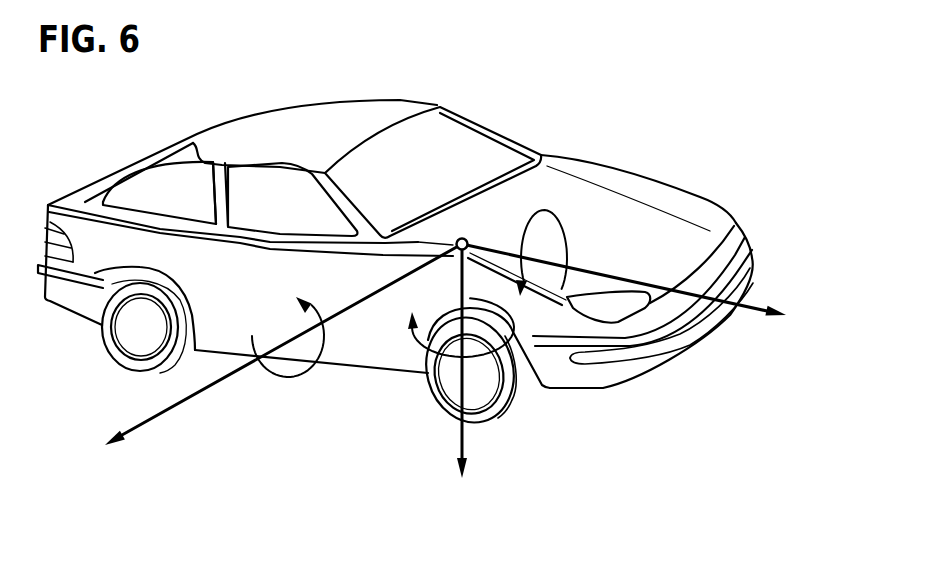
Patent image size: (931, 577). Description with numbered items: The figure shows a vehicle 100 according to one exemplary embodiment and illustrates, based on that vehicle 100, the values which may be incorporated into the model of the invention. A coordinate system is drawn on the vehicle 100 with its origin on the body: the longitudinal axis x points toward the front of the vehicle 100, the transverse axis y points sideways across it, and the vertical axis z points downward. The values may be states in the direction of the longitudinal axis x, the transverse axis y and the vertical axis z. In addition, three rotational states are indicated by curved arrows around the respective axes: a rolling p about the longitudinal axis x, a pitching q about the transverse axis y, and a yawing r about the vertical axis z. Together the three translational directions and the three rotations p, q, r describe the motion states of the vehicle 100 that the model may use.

The vehicle 100 is at (402, 98).
The longitudinal axis x is at (634, 286).
The transverse axis y is at (273, 348).
The vertical axis z is at (461, 375).
The rolling p is at (541, 253).
The pitching q is at (288, 337).
The yawing r is at (461, 320).